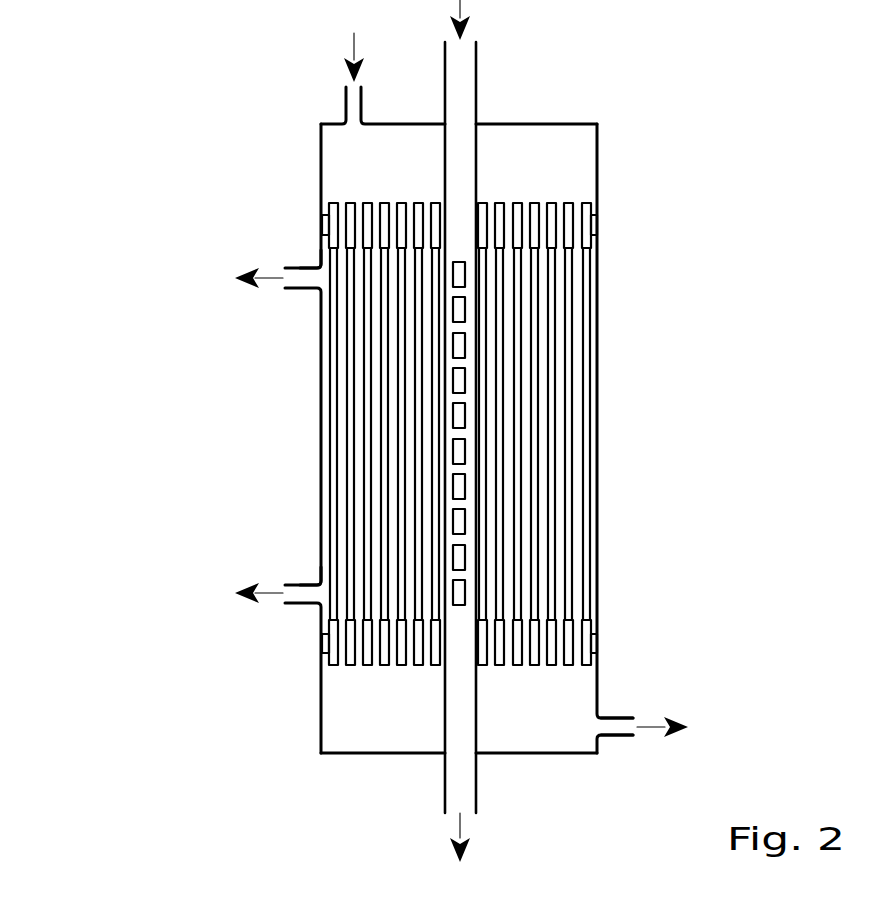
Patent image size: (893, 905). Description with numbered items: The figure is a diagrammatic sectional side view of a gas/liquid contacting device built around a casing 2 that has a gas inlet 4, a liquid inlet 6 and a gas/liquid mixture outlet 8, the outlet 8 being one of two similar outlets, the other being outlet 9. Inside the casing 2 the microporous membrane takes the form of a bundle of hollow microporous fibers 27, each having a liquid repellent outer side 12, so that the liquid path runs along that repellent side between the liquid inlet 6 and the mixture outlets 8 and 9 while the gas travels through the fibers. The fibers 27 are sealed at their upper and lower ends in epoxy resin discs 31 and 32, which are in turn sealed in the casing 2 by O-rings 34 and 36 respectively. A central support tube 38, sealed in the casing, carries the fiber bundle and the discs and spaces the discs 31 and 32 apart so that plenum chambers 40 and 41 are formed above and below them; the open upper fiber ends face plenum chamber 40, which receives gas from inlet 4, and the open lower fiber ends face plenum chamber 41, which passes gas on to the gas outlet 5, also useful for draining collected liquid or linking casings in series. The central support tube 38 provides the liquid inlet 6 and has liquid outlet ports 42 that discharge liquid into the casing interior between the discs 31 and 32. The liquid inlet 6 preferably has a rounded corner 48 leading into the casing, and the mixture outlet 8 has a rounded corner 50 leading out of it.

The casing 2 is at (598, 380).
The gas inlet 4 is at (352, 105).
The gas outlet 5 is at (613, 722).
The liquid inlet 6 is at (477, 147).
The gas/liquid mixture outlet 8 is at (305, 592).
The gas/liquid mixture outlet 9 is at (313, 266).
The liquid repellent outer side 12 is at (583, 345).
The hollow microporous fibers 27 is at (427, 413).
The epoxy resin disc 31 is at (568, 200).
The epoxy resin disc 32 is at (595, 615).
The O-ring 34 is at (598, 222).
The O-ring 36 is at (570, 687).
The central support tube 38 is at (470, 352).
The plenum chamber 40 is at (548, 148).
The plenum chamber 41 is at (596, 638).
The liquid outlet ports 42 is at (462, 278).
The rounded corner 48 is at (318, 263).
The rounded corner 50 is at (318, 580).